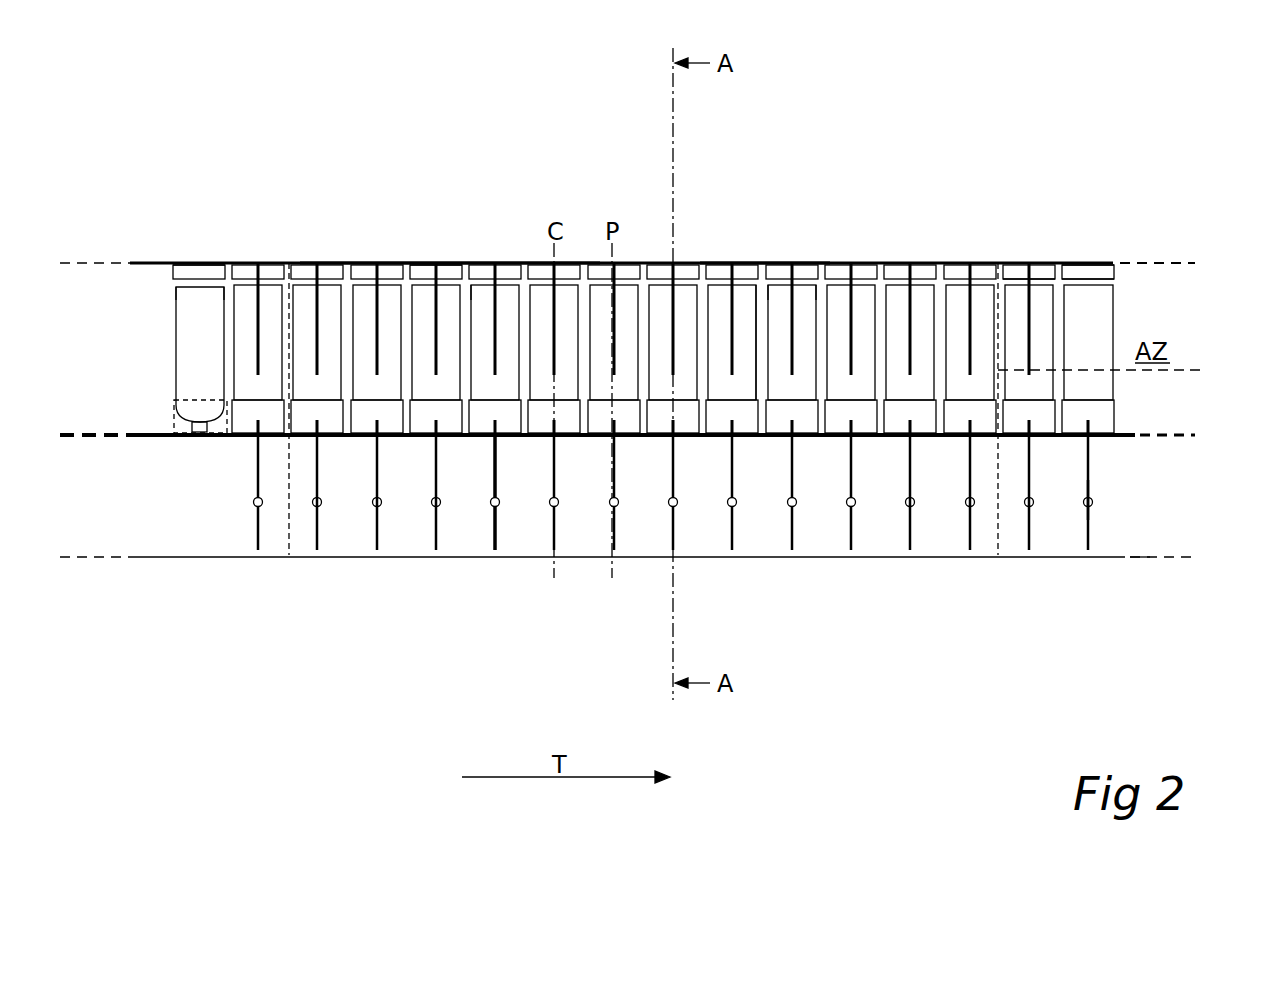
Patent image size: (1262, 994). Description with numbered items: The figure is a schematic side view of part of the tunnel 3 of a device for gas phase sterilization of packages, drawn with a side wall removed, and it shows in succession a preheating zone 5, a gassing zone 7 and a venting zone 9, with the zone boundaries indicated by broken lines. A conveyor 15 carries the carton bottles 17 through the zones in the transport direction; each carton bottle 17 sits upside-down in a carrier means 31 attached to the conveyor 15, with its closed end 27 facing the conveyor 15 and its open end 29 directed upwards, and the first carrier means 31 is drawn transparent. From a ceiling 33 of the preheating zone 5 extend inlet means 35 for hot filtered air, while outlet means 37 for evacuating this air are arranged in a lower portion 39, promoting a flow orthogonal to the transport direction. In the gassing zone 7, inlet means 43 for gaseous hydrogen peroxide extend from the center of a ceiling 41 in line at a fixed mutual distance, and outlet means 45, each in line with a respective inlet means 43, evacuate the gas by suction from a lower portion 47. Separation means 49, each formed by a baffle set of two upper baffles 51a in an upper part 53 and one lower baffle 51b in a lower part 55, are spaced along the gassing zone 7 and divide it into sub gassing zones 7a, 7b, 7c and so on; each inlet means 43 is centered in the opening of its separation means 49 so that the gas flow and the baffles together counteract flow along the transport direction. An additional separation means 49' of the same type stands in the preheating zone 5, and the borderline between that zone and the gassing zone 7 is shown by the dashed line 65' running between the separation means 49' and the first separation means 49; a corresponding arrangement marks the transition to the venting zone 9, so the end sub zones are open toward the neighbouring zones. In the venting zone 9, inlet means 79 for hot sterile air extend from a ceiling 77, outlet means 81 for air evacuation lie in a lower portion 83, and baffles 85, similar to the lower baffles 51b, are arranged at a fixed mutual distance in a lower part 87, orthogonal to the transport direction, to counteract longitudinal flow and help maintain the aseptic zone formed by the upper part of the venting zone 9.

The tunnel 3 is at (446, 88).
The preheating zone 5 is at (157, 340).
The gassing zone 7 is at (757, 270).
The sub gassing zone 7a is at (300, 463).
The sub gassing zone 7b is at (360, 463).
The sub gassing zone 7c is at (415, 463).
The venting zone 9 is at (1060, 287).
The conveyor 15 is at (213, 440).
The carton bottle 17 is at (1113, 298).
The closed end 27 is at (175, 433).
The open end 29 is at (207, 287).
The carrier means 31 is at (1113, 400).
The ceiling 33 is at (157, 287).
The inlet means 35 is at (197, 275).
The outlet means 37 is at (257, 502).
The lower portion 39 is at (145, 505).
The ceiling 41 is at (467, 288).
The inlet means 43 is at (447, 273).
The outlet means 45 is at (497, 505).
The lower portion 47 is at (805, 517).
The separation means 49 is at (912, 326).
The separation means 49' is at (278, 445).
The upper baffle 51a is at (842, 307).
The lower baffle 51b is at (968, 525).
The upper part 53 is at (759, 353).
The lower part 55 is at (643, 473).
The dashed line 65' is at (318, 479).
The ceiling 77 is at (1118, 263).
The inlet means 79 is at (1013, 272).
The outlet means 81 is at (1093, 503).
The lower portion 83 is at (1148, 528).
The baffle 85 is at (1088, 528).
The lower part 87 is at (1113, 465).